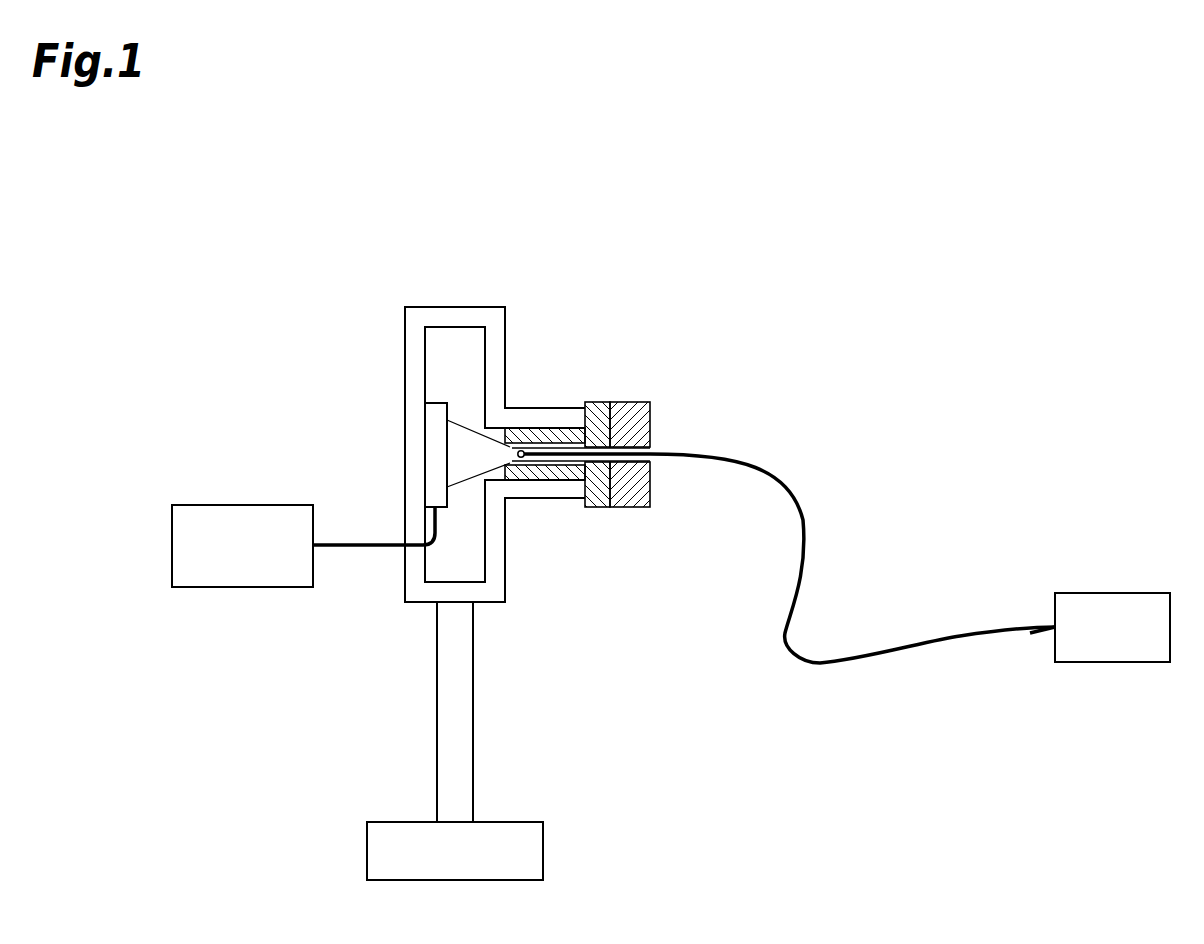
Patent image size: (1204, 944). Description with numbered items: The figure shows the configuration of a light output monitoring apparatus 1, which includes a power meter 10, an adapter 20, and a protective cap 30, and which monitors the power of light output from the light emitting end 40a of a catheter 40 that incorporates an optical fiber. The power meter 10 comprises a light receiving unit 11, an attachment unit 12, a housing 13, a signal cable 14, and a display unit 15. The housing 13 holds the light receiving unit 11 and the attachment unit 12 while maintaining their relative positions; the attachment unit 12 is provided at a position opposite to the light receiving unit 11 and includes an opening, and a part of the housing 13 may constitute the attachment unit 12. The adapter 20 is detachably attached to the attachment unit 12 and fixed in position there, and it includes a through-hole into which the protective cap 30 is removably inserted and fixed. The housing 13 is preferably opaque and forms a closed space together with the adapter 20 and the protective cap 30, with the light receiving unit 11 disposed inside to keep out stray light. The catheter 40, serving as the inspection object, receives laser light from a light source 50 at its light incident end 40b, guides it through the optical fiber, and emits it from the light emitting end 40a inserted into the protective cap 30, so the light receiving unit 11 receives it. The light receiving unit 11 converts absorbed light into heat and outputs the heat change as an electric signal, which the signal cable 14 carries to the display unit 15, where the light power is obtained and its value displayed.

The light output monitoring apparatus 1 is at (613, 250).
The power meter 10 is at (585, 270).
The light receiving unit 11 is at (436, 421).
The attachment unit 12 is at (548, 408).
The housing 13 is at (414, 330).
The signal cable 14 is at (358, 545).
The display unit 15 is at (242, 505).
The adapter 20 is at (602, 508).
The protective cap 30 is at (633, 505).
The catheter 40 is at (771, 468).
The light emitting end 40a is at (522, 461).
The light incident end 40b is at (1052, 632).
The light source 50 is at (1112, 593).